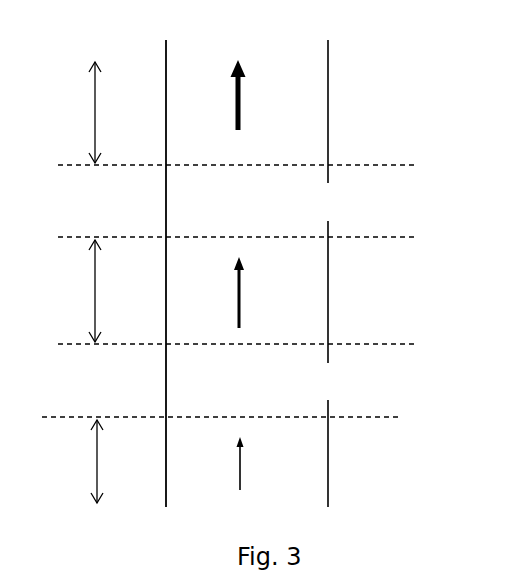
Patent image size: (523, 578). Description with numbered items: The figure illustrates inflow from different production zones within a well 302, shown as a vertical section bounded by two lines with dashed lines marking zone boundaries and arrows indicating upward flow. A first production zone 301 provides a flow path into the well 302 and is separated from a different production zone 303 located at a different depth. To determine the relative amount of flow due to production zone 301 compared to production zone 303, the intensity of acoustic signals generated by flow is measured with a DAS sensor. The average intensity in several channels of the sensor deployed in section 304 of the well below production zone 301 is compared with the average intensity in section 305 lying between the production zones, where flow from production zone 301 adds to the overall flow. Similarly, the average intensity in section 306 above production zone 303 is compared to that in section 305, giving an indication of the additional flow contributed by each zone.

The first production zone 301 is at (318, 370).
The well 302 is at (328, 111).
The production zone 303 is at (316, 190).
The section of the well 304 is at (77, 461).
The section of the well 305 is at (75, 291).
The section of the well 306 is at (75, 112).